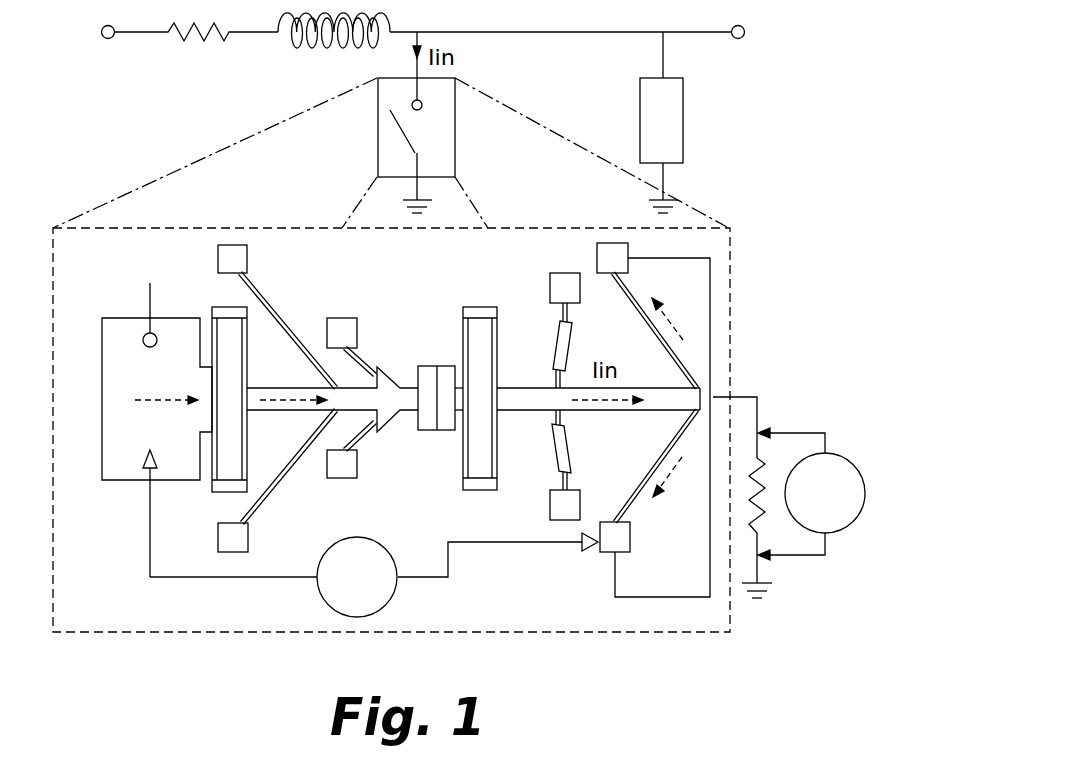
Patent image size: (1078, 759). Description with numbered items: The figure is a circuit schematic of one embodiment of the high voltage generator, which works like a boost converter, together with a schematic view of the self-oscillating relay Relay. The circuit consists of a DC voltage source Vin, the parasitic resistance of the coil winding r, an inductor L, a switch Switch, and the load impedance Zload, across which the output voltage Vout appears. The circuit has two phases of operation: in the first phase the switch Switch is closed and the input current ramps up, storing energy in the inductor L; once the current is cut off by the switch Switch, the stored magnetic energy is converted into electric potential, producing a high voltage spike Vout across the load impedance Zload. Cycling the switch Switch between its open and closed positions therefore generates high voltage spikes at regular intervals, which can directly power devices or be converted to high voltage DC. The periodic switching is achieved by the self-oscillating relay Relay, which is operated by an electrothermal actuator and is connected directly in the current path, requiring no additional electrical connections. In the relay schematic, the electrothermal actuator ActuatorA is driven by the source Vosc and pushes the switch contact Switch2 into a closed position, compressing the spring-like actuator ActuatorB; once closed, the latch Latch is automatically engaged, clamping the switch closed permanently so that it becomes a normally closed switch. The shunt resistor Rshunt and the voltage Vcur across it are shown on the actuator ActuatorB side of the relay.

The DC voltage source Vin is at (85, 45).
The parasitic resistance of the coil winding r is at (198, 45).
The inductor L is at (334, 45).
The output voltage Vout is at (738, 49).
The switch Switch is at (455, 145).
The load impedance Zload is at (661, 122).
The self-oscillating relay Relay is at (391, 430).
The electrothermal actuator A ActuatorA is at (250, 313).
The actuator B ActuatorB is at (703, 353).
The latch Latch is at (370, 452).
The switch contact Switch2 is at (437, 452).
The oscillator voltage source Vosc is at (374, 548).
The shunt resistor Rshunt is at (773, 535).
The current sense voltage Vcur is at (811, 494).